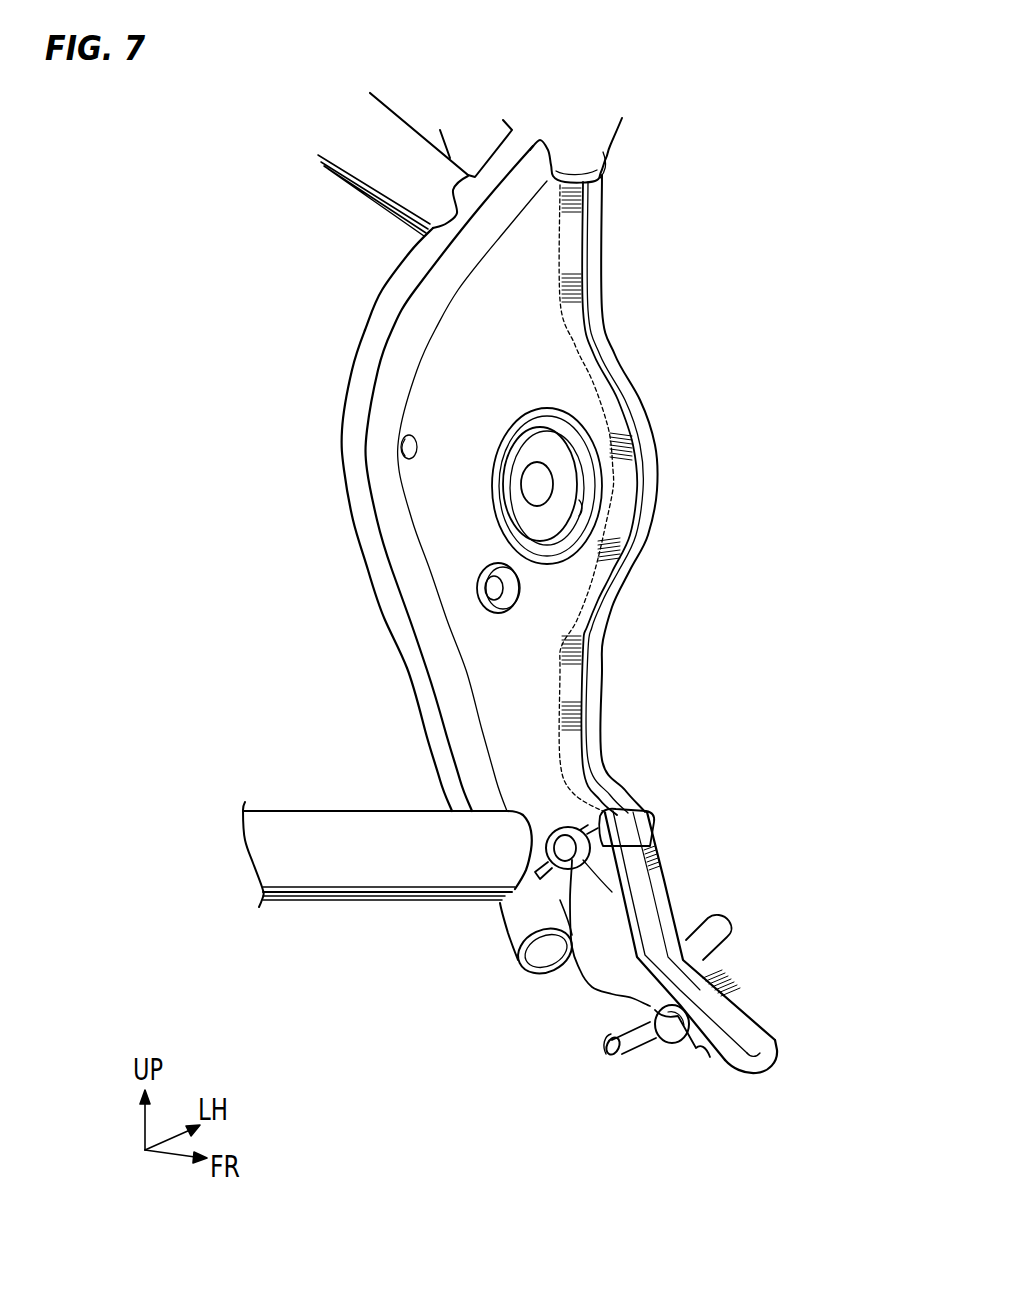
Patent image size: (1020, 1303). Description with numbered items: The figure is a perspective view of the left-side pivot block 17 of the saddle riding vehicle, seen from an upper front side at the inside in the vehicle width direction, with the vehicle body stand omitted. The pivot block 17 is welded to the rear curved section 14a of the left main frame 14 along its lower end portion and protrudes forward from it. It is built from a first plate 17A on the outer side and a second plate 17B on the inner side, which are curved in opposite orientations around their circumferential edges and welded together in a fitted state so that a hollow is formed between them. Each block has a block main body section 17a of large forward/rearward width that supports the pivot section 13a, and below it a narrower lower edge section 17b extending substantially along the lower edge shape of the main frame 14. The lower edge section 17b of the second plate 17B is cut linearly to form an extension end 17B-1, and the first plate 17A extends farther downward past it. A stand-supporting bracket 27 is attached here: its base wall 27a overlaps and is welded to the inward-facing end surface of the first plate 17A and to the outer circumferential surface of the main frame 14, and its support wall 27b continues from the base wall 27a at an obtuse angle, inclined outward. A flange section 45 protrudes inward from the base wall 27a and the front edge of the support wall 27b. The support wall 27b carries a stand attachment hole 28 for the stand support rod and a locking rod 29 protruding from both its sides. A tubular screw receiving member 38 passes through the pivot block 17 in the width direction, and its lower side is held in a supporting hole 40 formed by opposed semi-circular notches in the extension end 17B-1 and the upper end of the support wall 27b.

The main frame 14 is at (612, 153).
The rear curved section 14a is at (363, 540).
The pivot block 17 is at (608, 313).
The first plate 17A is at (658, 491).
The second plate 17B is at (430, 424).
The extension end 17B-1 is at (605, 843).
The block main body section 17a is at (428, 488).
The lower edge section 17b is at (500, 720).
The pivot section 13a is at (580, 503).
The stand-supporting bracket 27 is at (563, 903).
The base wall 27a is at (607, 912).
The support wall 27b is at (600, 980).
The stand attachment hole 28 is at (673, 1033).
The locking rod 29 is at (723, 933).
The screw receiving member 38 is at (548, 850).
The supporting hole 40 is at (563, 822).
The flange section 45 is at (737, 1027).